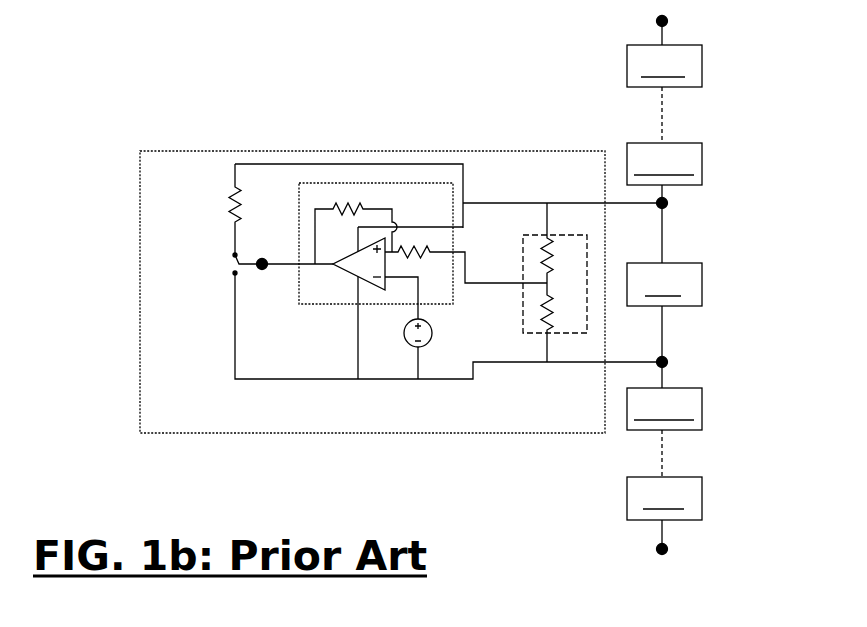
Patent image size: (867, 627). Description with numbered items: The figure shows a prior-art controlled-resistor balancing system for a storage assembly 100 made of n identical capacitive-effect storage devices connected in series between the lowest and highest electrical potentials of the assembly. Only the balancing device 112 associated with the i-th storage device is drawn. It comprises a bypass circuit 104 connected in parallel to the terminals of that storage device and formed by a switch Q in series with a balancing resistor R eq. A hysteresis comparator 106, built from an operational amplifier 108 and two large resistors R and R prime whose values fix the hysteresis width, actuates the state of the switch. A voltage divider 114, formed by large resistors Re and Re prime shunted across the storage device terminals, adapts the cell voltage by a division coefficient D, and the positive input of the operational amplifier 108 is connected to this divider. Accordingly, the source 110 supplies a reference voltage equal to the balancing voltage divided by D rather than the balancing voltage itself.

The storage assembly 100 is at (766, 117).
The bypass circuit 104 is at (233, 342).
The hysteresis comparator 106 is at (372, 183).
The operational amplifier 108 is at (346, 272).
The source 110 is at (432, 342).
The balancing device 112 is at (278, 150).
The voltage divider 114 is at (530, 235).